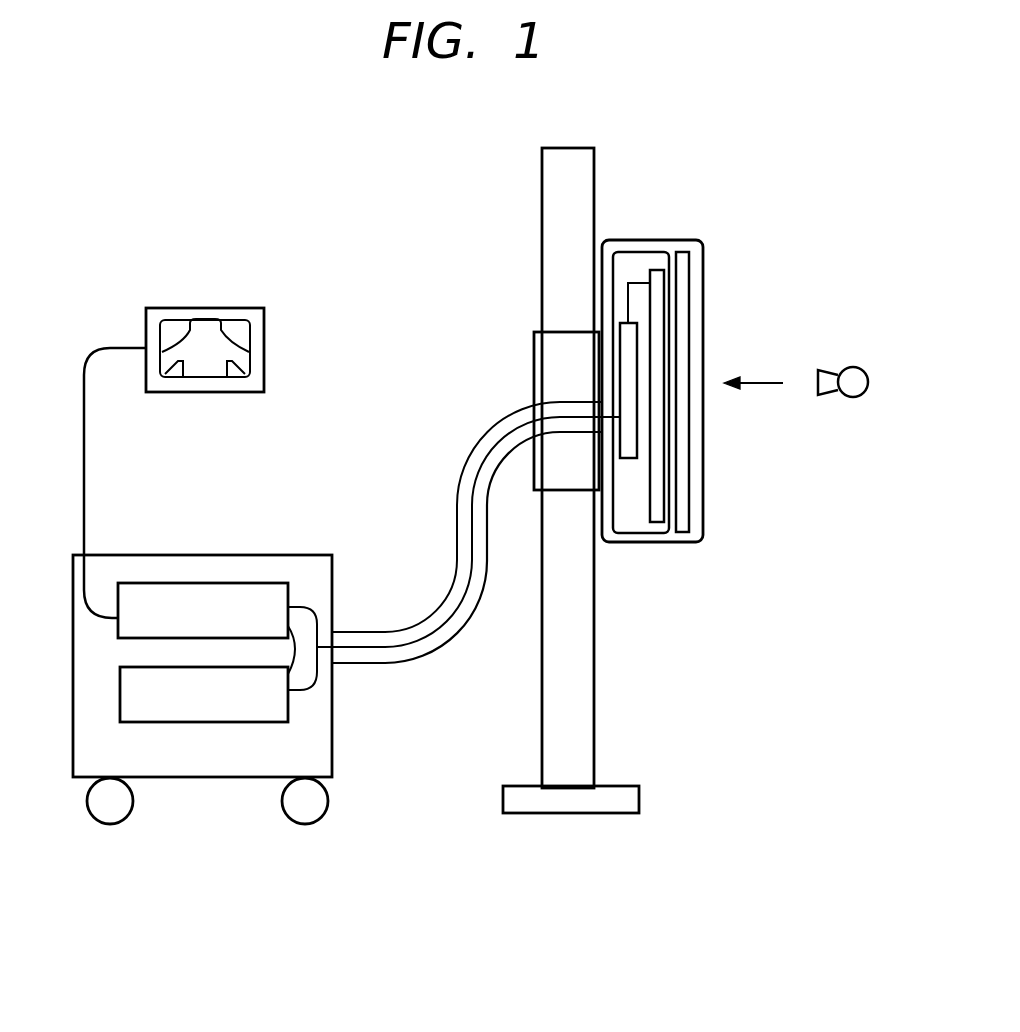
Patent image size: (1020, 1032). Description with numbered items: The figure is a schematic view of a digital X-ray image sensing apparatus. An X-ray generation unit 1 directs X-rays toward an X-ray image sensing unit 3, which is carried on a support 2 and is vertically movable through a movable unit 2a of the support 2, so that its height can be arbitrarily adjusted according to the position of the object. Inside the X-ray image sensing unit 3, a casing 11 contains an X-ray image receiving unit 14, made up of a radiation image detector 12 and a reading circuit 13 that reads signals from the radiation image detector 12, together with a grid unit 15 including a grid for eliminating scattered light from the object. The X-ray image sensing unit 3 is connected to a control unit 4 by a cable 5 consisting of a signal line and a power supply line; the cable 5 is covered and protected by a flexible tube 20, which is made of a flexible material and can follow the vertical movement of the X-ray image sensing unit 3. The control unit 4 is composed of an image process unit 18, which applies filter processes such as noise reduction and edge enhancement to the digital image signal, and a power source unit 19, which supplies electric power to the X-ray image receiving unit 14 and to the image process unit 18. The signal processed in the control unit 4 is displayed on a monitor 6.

The X-ray generation unit 1 is at (853, 380).
The support 2 is at (612, 711).
The movable unit 2a is at (555, 358).
The X-ray image sensing unit 3 is at (704, 386).
The control unit 4 is at (230, 676).
The cable 5 is at (468, 550).
The monitor 6 is at (238, 308).
The casing 11 is at (683, 242).
The radiation image detector 12 is at (657, 512).
The reading circuit 13 is at (628, 458).
The X-ray image receiving unit 14 is at (645, 252).
The grid unit 15 is at (705, 278).
The image process unit 18 is at (203, 590).
The power source unit 19 is at (203, 713).
The flexible tube 20 is at (446, 637).